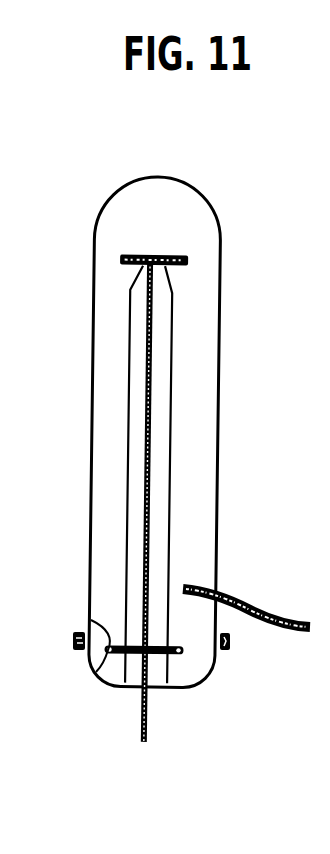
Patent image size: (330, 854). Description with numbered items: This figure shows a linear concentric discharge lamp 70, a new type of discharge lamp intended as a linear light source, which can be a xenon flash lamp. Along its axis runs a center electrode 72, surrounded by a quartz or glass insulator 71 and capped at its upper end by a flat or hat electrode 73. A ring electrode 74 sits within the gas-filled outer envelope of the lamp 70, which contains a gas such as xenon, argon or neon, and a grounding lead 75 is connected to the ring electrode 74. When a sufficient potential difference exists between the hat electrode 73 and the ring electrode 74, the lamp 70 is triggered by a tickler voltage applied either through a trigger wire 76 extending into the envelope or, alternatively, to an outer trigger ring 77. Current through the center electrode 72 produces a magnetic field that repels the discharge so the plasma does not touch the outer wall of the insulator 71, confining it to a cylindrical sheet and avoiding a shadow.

The lamp 70 is at (219, 432).
The insulator 71 is at (170, 337).
The center electrode 72 is at (141, 325).
The hat electrode 73 is at (155, 255).
The ring electrode 74 is at (92, 624).
The grounding lead 75 is at (97, 671).
The trigger wire 76 is at (237, 595).
The outer trigger ring 77 is at (223, 653).